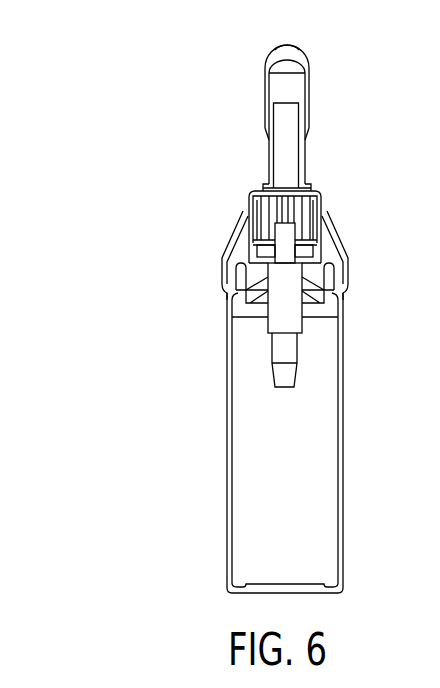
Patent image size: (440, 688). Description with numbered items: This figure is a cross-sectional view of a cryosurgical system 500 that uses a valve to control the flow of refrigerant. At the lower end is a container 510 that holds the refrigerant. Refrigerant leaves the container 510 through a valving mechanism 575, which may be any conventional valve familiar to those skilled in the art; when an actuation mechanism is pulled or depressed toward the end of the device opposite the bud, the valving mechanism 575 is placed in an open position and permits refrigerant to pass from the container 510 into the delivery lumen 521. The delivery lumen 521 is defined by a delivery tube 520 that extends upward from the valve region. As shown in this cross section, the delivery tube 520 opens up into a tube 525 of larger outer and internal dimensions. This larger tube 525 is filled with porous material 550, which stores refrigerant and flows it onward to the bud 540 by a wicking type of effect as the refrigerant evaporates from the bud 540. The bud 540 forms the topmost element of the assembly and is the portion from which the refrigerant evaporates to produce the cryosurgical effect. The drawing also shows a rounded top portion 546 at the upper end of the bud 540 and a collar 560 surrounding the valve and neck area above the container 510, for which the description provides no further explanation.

The dispenser assembly 500 is at (92, 245).
The container body 510 is at (339, 428).
The pump head 520 is at (295, 222).
The pump head inner wall 521 is at (282, 216).
The stem 525 is at (305, 162).
The cap 540 is at (309, 92).
The cap top 546 is at (290, 46).
The plunger rod 550 is at (282, 162).
The collar 560 is at (346, 246).
The seal member 575 is at (243, 287).